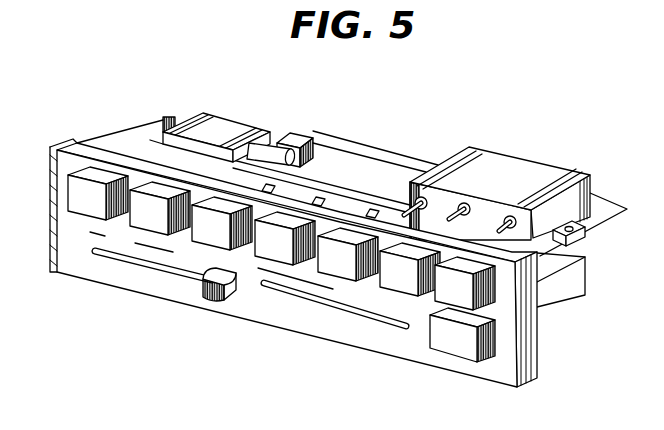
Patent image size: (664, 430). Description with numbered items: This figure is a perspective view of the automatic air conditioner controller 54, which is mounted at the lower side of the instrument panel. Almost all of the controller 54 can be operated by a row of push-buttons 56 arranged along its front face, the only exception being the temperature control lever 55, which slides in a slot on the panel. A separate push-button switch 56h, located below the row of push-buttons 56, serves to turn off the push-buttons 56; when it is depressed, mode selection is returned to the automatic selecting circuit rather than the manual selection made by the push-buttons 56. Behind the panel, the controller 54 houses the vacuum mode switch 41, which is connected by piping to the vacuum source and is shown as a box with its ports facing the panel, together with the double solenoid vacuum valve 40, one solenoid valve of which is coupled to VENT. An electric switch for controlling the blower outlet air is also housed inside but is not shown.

The double solenoid vacuum valve 40 is at (245, 130).
The vacuum mode switch 41 is at (514, 167).
The automatic air conditioner controller 54 is at (263, 329).
The temperature control lever 55 is at (201, 300).
The push-buttons 56 is at (400, 283).
The push-button switch 56h is at (495, 342).